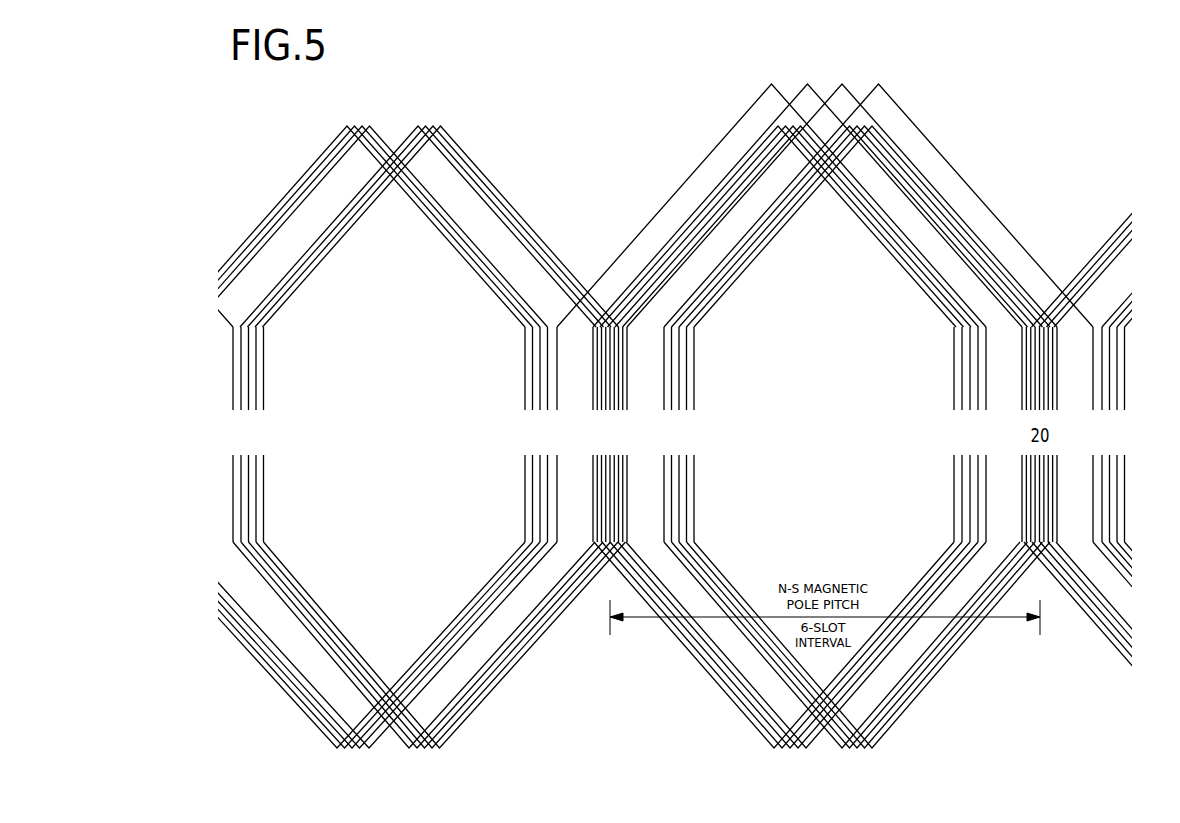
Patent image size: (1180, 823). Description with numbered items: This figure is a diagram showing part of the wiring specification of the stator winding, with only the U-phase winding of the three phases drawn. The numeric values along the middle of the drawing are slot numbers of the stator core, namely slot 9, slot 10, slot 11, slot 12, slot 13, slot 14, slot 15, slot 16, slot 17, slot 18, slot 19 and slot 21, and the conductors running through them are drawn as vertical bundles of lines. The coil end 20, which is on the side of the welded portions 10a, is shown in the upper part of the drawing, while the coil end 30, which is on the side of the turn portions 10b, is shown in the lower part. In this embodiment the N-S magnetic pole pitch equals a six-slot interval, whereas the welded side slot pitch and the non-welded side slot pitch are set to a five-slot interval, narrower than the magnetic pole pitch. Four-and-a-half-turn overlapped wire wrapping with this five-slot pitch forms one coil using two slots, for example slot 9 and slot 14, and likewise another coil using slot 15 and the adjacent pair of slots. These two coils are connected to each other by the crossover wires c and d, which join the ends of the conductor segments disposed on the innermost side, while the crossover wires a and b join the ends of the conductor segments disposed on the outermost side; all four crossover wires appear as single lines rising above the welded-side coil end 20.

The welded portions 10a is at (471, 133).
The turn portions 10b is at (466, 753).
The coil end 20 is at (535, 206).
The coil end 30 is at (552, 659).
The crossover wire a is at (697, 161).
The crossover wire b is at (852, 77).
The crossover wire c is at (802, 83).
The crossover wire d is at (926, 138).
The slot 9 is at (248, 434).
The slot 10 is at (322, 435).
The slot 11 is at (395, 435).
The slot 12 is at (468, 435).
The slot 13 is at (541, 434).
The slot 14 is at (610, 434).
The slot 15 is at (679, 434).
The slot 16 is at (752, 435).
The slot 17 is at (826, 435).
The slot 18 is at (898, 435).
The slot 19 is at (970, 434).
The slot 21 is at (1109, 434).